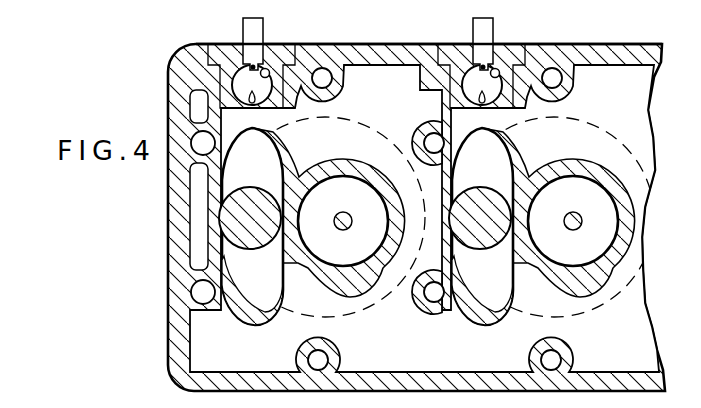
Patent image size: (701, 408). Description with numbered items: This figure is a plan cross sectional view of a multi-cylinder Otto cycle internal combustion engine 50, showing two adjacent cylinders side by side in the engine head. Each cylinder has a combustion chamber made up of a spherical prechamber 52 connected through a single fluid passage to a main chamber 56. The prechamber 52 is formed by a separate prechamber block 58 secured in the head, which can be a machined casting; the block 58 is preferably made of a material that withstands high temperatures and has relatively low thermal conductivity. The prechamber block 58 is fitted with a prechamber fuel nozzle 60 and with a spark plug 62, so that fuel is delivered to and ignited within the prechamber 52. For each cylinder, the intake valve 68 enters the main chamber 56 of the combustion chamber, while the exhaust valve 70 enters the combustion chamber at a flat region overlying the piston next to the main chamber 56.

The internal combustion engine 50 is at (155, 292).
The spherical prechamber 52 is at (240, 82).
The main chamber 56 is at (241, 290).
The prechamber block 58 is at (196, 44).
The prechamber fuel nozzle 60 is at (250, 53).
The spark plug 62 is at (266, 70).
The intake valve 68 is at (265, 224).
The exhaust valve 70 is at (362, 256).